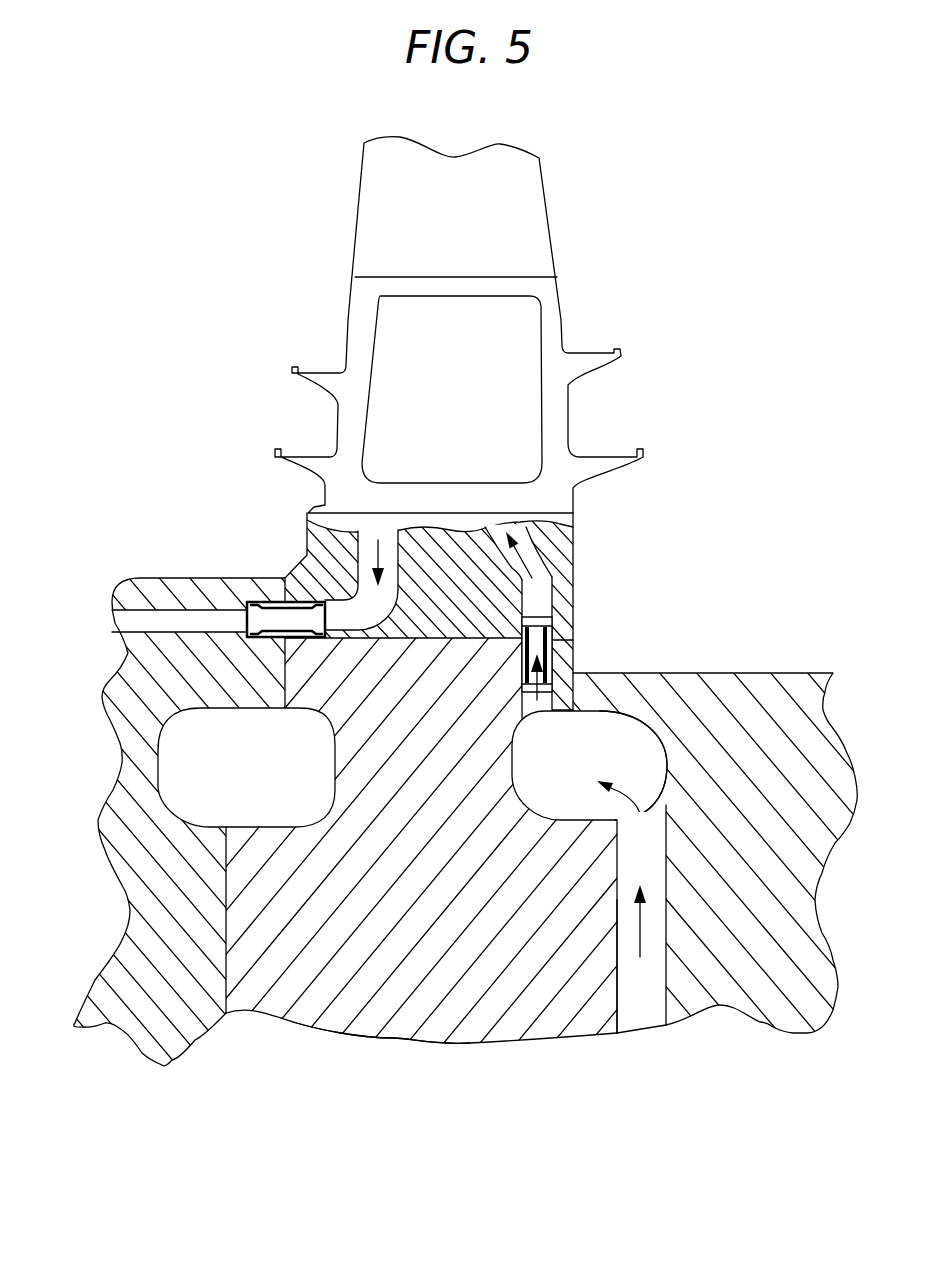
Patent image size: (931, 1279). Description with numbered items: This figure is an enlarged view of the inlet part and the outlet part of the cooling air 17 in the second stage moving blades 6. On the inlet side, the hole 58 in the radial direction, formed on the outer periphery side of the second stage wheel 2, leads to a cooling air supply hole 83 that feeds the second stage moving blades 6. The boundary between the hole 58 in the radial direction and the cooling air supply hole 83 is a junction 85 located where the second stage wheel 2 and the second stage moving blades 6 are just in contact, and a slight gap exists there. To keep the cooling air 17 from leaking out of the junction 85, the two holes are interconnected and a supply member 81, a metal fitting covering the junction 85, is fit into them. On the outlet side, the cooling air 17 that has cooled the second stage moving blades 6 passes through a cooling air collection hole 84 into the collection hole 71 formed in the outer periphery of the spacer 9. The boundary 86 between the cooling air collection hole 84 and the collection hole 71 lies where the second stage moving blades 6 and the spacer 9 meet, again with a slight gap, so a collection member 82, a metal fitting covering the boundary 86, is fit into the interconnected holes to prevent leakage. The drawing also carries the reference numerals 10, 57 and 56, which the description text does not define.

The second stage moving blades 6 is at (528, 214).
The spacer 9 is at (165, 888).
The collection hole 71 is at (157, 620).
The disk member 10 is at (735, 992).
The boundary 86 is at (283, 680).
The cooling air collection hole 84 is at (365, 600).
The collection member 82 is at (255, 603).
The junction 85 is at (523, 617).
The cooling air supply hole 83 is at (532, 560).
The supply member 81 is at (548, 662).
The hole in the radial direction 58 is at (553, 708).
The cooling air passage 57 is at (670, 720).
The cooling air supply passage 56 is at (645, 1035).
The cooling air 17 is at (640, 933).
The second stage wheel 2 is at (393, 1022).